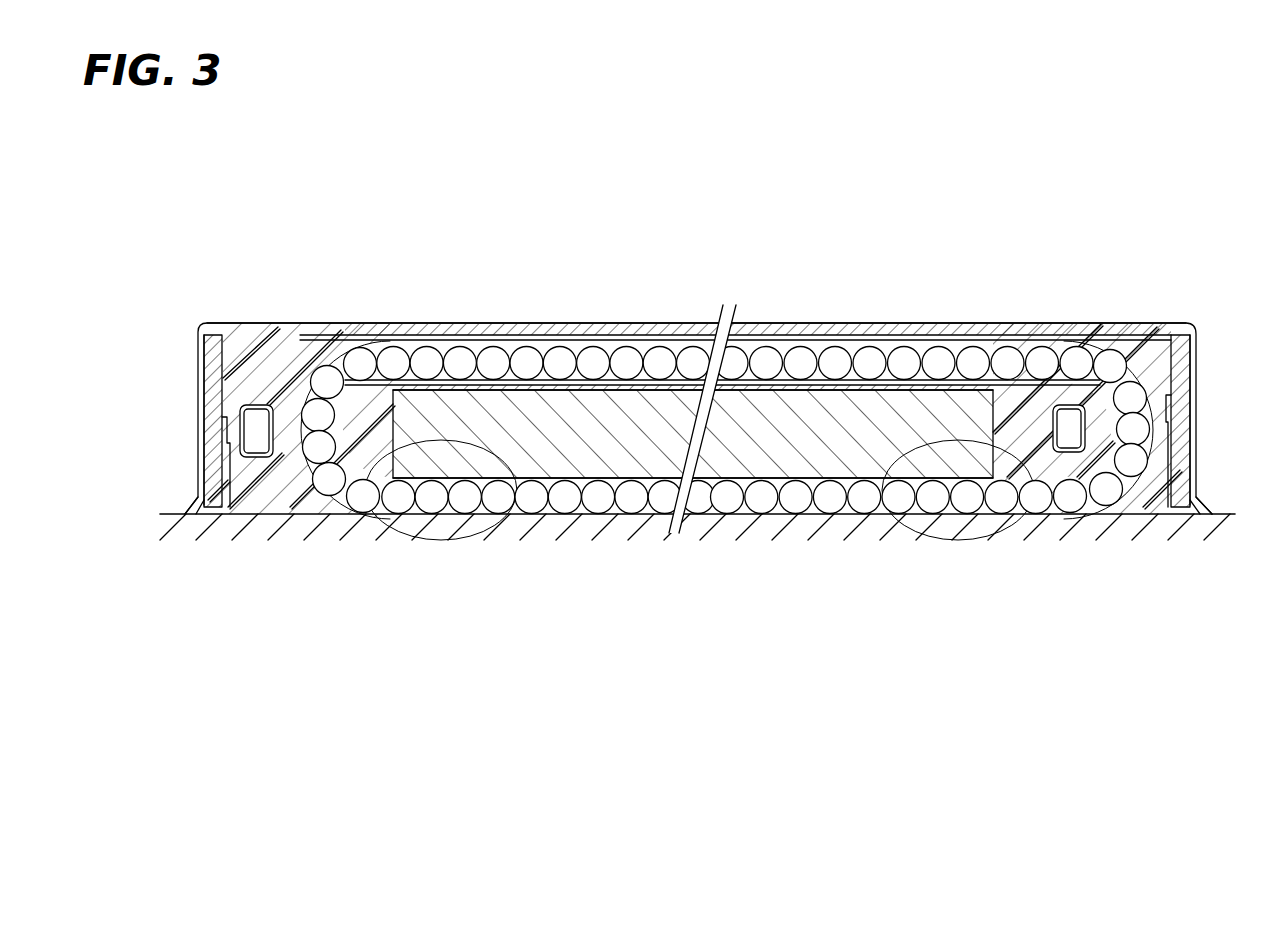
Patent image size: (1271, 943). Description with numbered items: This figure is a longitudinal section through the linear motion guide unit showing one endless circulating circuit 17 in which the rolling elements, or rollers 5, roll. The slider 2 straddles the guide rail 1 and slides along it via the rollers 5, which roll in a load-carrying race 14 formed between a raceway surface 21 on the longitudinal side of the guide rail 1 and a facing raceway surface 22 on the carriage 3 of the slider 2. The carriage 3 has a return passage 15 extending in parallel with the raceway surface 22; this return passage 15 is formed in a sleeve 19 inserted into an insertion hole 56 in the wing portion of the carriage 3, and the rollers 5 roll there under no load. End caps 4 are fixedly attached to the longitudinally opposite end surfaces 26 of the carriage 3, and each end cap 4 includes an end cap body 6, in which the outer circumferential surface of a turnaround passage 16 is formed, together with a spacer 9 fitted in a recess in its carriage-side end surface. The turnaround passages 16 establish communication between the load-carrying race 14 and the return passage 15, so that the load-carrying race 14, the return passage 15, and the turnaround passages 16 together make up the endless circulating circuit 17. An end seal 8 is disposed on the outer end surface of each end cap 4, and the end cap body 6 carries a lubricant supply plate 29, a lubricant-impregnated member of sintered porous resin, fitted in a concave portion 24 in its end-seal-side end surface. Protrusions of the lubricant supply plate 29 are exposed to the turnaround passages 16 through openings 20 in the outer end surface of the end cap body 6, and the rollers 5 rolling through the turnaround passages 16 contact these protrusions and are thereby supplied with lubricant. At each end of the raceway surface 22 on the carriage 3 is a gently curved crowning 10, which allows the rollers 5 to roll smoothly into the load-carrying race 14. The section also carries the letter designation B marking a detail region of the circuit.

The guide rail 1 is at (292, 523).
The slider 2 is at (938, 322).
The carriage 3 is at (612, 415).
The end cap 4 is at (320, 325).
The roller 5 is at (247, 405).
The end cap body 6 is at (290, 325).
The end seal 8 is at (197, 367).
The spacer 9 is at (387, 340).
The crowning 10 is at (403, 540).
The load-carrying race 14 is at (478, 440).
The return passage 15 is at (512, 350).
The turnaround passage 16 is at (362, 400).
The endless circulating circuit 17 is at (412, 137).
The sleeve 19 is at (437, 340).
The opening 20 is at (233, 515).
The raceway surface 21 is at (730, 515).
The raceway surface 22 is at (768, 400).
The concave portion 24 is at (195, 400).
The end surface 26 is at (387, 327).
The lubricant supply plate 29 is at (213, 325).
The insertion hole 56 is at (575, 324).
The ball B is at (1022, 518).